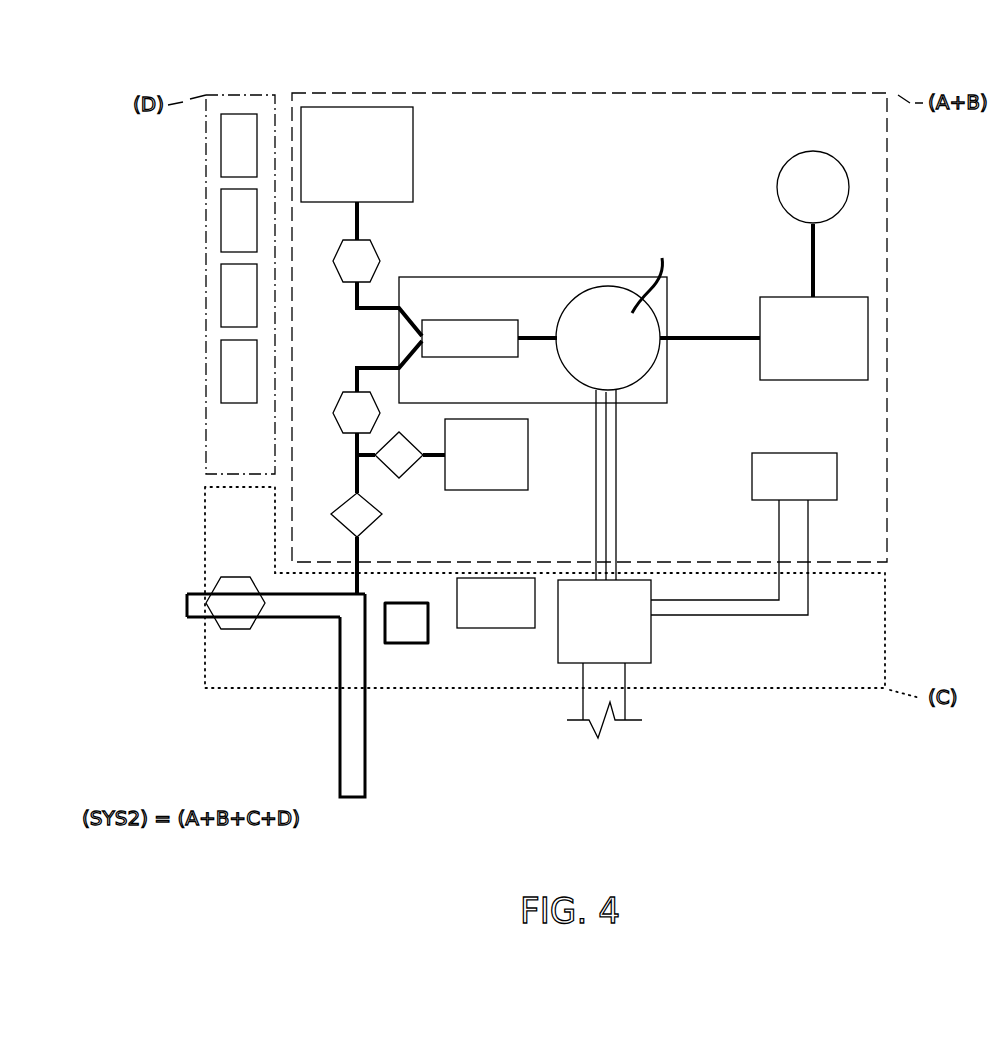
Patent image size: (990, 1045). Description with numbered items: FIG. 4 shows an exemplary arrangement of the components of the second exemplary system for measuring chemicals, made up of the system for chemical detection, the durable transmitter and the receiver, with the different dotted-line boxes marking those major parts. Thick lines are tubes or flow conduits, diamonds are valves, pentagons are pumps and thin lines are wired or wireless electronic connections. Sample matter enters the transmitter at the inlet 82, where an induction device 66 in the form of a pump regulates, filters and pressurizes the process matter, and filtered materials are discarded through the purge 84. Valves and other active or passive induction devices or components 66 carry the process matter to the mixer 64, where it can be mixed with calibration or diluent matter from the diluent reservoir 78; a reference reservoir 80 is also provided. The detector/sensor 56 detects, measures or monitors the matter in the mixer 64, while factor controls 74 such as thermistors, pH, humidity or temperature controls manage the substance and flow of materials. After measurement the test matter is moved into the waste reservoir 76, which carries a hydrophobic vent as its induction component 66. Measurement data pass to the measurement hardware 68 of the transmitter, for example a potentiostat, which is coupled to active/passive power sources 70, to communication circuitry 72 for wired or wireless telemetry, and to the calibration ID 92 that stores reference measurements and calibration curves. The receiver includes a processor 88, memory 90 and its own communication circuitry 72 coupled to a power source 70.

The detector/sensor 56 is at (653, 274).
The mixer 64 is at (487, 340).
The active/passive induction device or component 66 is at (353, 262).
The measurement hardware 68 is at (607, 295).
The active/passive power source 70 is at (227, 367).
The communication circuitry 72 is at (227, 292).
The factor control 74 is at (533, 277).
The waste reservoir 76 is at (771, 303).
The diluent reservoir 78 is at (352, 120).
The reference reservoir 80 is at (485, 478).
The inlet 82 is at (187, 605).
The purge 84 is at (348, 760).
The processor 88 is at (227, 143).
The memory 90 is at (227, 218).
The calibration ID 92 is at (793, 465).